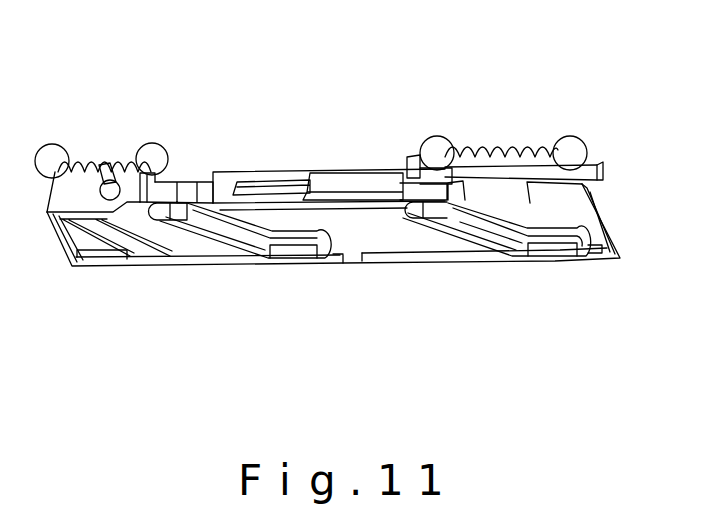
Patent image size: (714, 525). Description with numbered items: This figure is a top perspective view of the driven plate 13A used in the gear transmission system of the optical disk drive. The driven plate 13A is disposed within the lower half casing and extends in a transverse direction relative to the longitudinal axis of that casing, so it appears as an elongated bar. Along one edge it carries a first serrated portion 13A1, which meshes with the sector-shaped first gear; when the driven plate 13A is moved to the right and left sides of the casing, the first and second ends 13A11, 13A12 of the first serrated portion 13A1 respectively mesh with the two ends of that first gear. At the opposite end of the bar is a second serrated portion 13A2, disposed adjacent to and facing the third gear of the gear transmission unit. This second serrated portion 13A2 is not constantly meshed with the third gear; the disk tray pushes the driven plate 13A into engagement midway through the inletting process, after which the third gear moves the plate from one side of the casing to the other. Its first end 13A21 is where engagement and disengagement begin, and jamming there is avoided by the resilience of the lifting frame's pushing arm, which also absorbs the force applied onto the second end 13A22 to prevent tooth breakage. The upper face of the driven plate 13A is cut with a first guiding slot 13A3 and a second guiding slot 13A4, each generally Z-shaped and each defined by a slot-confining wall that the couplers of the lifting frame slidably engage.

The driven plate 13A is at (310, 172).
The first serrated portion 13A1 is at (506, 152).
The first end of the first serrated portion 13A11 is at (577, 137).
The second end of the first serrated portion 13A12 is at (437, 136).
The second serrated portion 13A2 is at (104, 164).
The first end of the second serrated portion 13A21 is at (153, 143).
The second end of the second serrated portion 13A22 is at (53, 144).
The first guiding slot 13A3 is at (502, 237).
The second guiding slot 13A4 is at (252, 243).